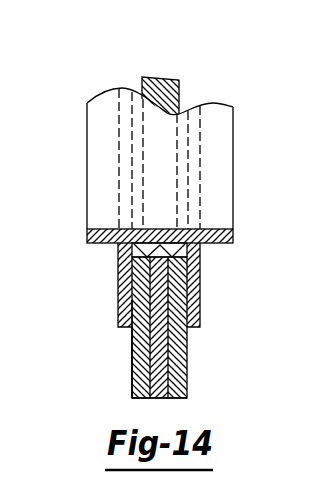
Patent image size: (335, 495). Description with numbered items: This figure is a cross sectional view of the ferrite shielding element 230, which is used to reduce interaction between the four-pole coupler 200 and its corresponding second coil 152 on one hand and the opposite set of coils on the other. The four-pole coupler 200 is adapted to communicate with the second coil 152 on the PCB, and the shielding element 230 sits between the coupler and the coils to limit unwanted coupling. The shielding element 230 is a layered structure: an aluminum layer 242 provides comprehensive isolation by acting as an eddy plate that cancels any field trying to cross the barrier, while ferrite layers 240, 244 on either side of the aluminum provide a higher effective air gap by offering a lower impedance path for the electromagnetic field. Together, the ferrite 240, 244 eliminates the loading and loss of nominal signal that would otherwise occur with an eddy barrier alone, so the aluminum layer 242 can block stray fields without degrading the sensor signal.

The second coil 152 is at (155, 82).
The 4-pole coupler 200 is at (200, 285).
The ferrite 240 is at (187, 345).
The aluminum layer 242 is at (160, 398).
The ferrite 244 is at (133, 353).
The ferrite shielding element 230 is at (100, 376).